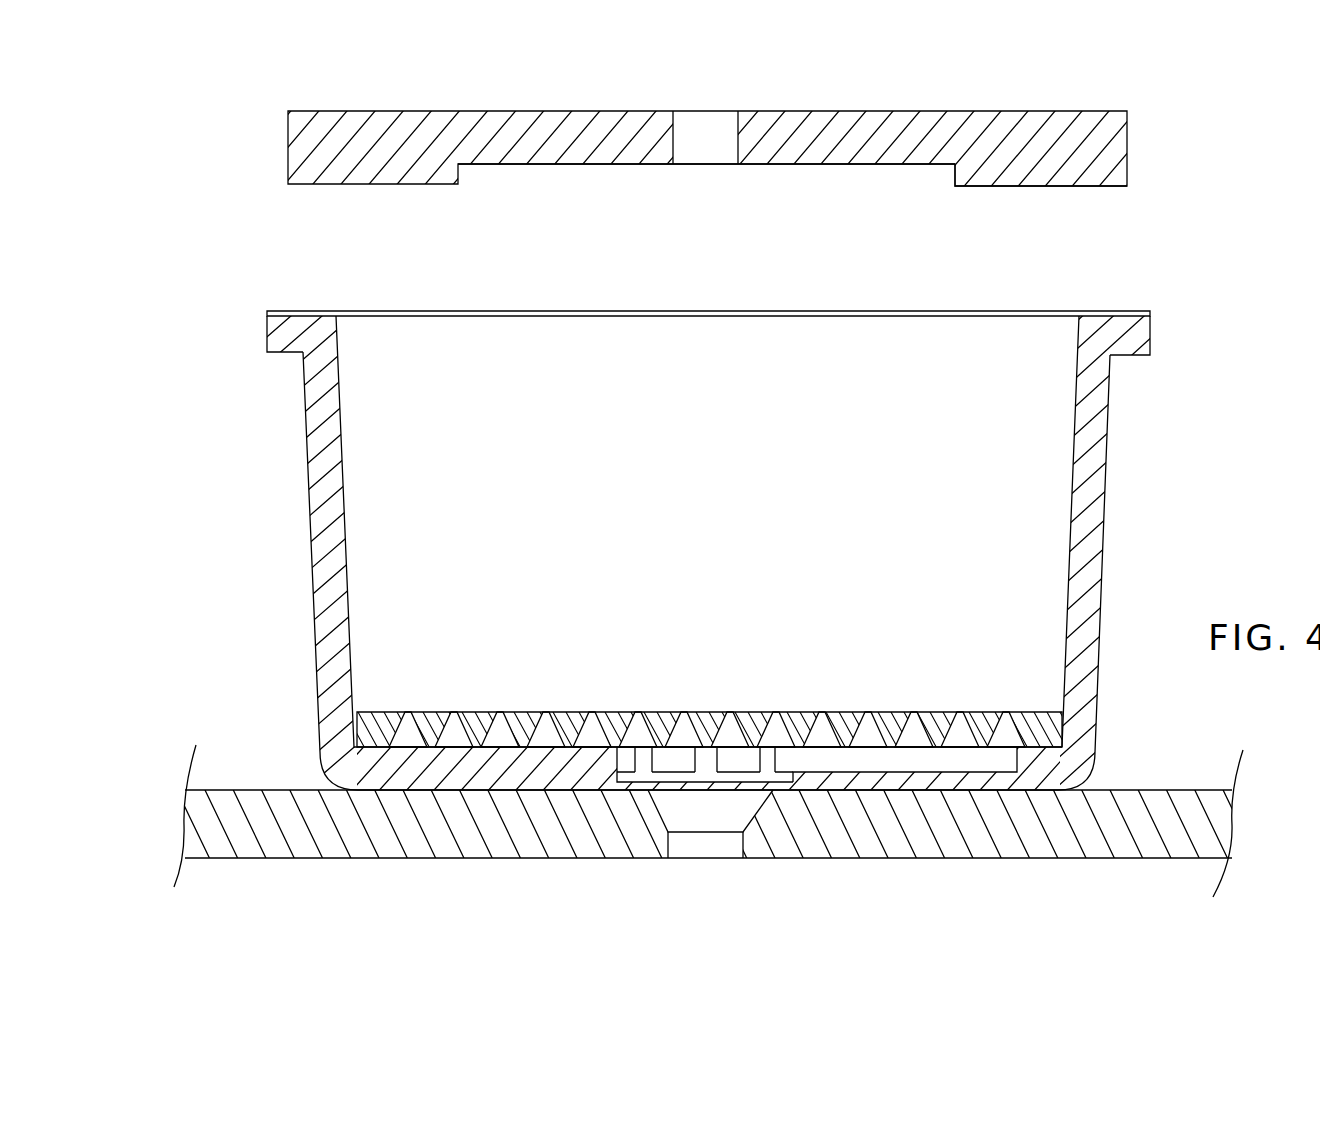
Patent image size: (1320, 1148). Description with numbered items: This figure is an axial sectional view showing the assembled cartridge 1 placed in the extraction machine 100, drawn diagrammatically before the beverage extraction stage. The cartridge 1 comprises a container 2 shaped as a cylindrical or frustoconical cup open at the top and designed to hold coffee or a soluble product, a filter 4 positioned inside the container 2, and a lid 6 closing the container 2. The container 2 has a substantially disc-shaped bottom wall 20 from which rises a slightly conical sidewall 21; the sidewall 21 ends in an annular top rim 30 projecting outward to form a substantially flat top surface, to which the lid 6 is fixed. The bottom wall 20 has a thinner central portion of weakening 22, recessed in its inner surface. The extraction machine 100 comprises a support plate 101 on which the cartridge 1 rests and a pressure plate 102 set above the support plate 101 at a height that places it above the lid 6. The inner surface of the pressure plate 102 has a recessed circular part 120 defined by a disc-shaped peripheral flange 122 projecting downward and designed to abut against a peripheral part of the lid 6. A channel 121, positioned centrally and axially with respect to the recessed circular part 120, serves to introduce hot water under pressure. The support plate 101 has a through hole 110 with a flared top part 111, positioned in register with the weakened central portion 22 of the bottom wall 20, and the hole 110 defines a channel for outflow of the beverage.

The extraction machine 100 is at (208, 233).
The pressure plate 102 is at (297, 165).
The recessed circular part 120 is at (880, 165).
The channel 121 is at (697, 140).
The peripheral flange 122 is at (1027, 185).
The support plate 101 is at (325, 828).
The through hole 110 is at (705, 855).
The flared top part 111 is at (690, 810).
The cartridge 1 is at (185, 423).
The container 2 is at (305, 636).
The bottom wall 20 is at (892, 787).
The sidewall 21 is at (330, 513).
The central portion of weakening 22 is at (775, 787).
The annular top rim 30 is at (285, 331).
The lid 6 is at (527, 313).
The filter 4 is at (560, 703).